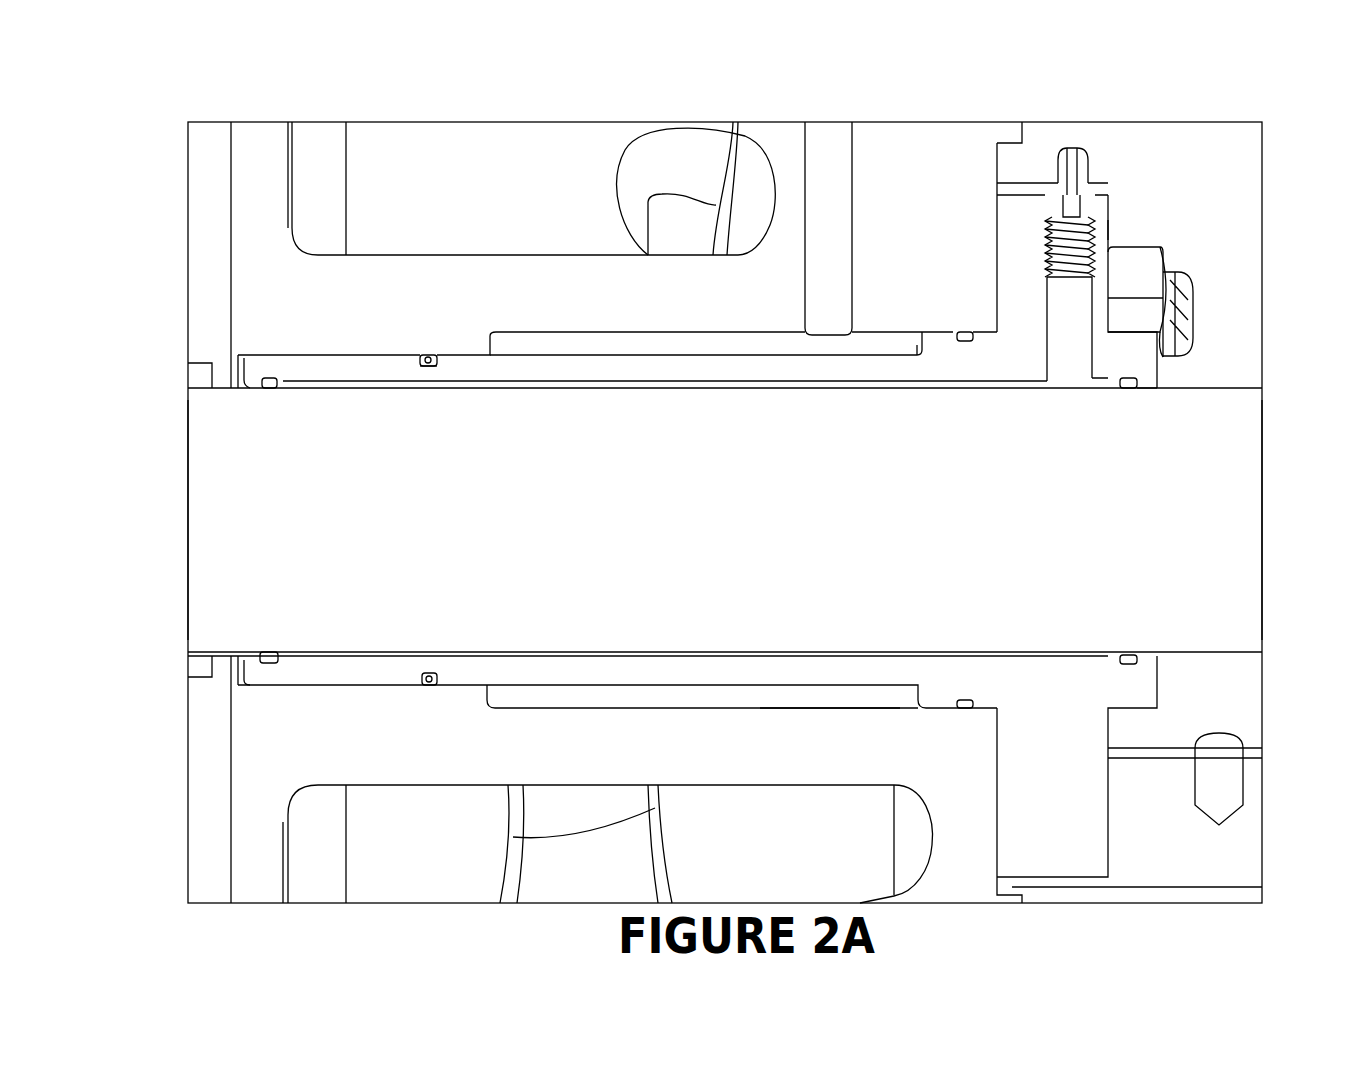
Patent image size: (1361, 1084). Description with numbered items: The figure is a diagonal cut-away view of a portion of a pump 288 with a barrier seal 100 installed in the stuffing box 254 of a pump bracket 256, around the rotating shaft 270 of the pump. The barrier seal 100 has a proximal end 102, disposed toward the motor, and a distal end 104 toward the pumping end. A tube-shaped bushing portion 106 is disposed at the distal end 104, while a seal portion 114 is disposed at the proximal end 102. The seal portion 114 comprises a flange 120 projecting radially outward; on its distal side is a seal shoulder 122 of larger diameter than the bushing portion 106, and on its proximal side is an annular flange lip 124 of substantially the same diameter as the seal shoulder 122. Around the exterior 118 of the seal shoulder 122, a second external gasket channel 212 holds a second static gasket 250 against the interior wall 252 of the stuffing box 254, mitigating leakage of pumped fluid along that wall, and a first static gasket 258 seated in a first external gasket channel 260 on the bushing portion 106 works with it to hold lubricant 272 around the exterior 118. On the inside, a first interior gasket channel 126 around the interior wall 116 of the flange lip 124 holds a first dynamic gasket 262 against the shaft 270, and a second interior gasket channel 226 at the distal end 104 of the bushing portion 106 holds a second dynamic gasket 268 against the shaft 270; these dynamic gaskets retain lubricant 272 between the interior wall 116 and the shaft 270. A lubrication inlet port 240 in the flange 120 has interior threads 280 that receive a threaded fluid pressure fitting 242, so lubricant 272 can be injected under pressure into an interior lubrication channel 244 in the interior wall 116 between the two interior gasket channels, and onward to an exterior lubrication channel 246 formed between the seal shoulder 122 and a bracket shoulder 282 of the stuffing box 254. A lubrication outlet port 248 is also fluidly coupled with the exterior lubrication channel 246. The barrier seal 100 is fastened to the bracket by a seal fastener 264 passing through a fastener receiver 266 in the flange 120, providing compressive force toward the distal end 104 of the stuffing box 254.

The pump 288 is at (208, 98).
The lubrication outlet port 248 is at (828, 130).
The interior threads 280 is at (1080, 220).
The fluid pressure fitting 242 is at (1080, 150).
The lubrication inlet port 240 is at (1095, 212).
The barrier seal 100 is at (1134, 221).
The seal fastener 264 is at (1152, 268).
The fastener receiver 266 is at (1182, 350).
The second external gasket channel 212 is at (965, 327).
The stuffing box 254 is at (467, 343).
The first static gasket 258 is at (426, 353).
The lubricant 272 is at (658, 345).
The interior wall of stuffing box 252 is at (362, 355).
The first external gasket channel 260 is at (425, 372).
The second static gasket 250 is at (958, 345).
The first dynamic gasket 262 is at (1135, 390).
The first interior gasket channel 126 is at (1118, 396).
The proximal end 102 is at (1270, 434).
The distal end 104 is at (178, 507).
The second interior gasket channel 226 is at (274, 394).
The rotating shaft 270 is at (561, 523).
The second dynamic gasket 268 is at (269, 650).
The exterior lubrication channel 246 is at (640, 695).
The interior lubrication channel 244 is at (830, 655).
The interior wall 116 is at (1162, 655).
The flange lip 124 is at (1150, 700).
The bushing portion 106 is at (442, 698).
The bracket shoulder 282 is at (486, 712).
The exterior 118 is at (838, 702).
The seal shoulder 122 is at (938, 706).
The seal portion 114 is at (962, 742).
The flange 120 is at (1071, 837).
The pump bracket 256 is at (257, 880).